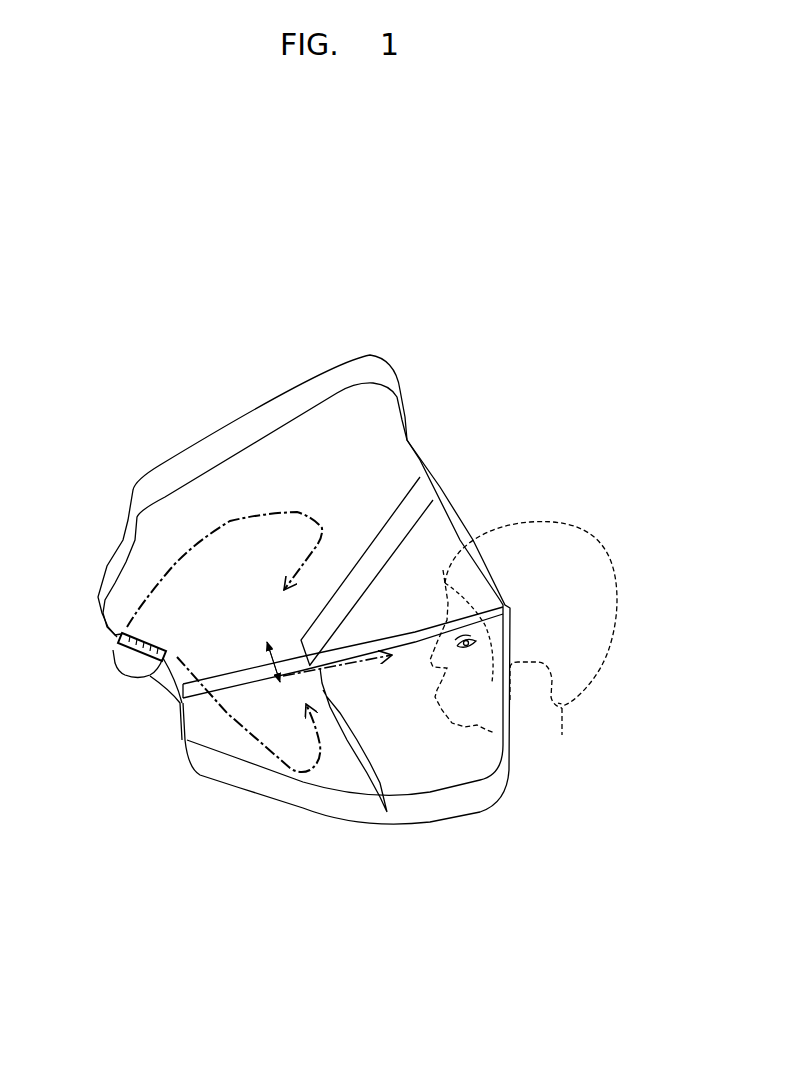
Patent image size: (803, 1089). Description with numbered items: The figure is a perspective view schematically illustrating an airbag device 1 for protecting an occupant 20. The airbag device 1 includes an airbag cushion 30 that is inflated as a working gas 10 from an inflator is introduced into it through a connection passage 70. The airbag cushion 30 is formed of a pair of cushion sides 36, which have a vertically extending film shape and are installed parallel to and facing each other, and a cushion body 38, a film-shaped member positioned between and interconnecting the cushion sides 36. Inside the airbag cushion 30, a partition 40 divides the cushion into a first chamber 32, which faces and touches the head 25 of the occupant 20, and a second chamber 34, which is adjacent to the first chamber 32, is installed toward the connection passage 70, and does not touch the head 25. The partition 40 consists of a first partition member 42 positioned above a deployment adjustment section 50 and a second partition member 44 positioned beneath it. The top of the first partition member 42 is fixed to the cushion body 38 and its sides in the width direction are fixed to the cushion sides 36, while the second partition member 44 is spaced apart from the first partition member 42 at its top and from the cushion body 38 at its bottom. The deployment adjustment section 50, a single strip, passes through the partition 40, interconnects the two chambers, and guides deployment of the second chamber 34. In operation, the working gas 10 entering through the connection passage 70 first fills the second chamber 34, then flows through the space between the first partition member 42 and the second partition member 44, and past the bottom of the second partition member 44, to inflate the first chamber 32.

The airbag device 1 is at (429, 298).
The working gas 10 is at (153, 583).
The occupant 20 is at (591, 510).
The head 25 is at (474, 694).
The airbag cushion 30 is at (402, 882).
The first chamber 32 is at (414, 604).
The second chamber 34 is at (361, 497).
The cushion sides 36 is at (443, 773).
The cushion body 38 is at (412, 811).
The partition 40 is at (393, 482).
The first partition member 42 is at (400, 517).
The second partition member 44 is at (370, 777).
The deployment adjustment section 50 is at (237, 680).
The connection passage 70 is at (160, 673).